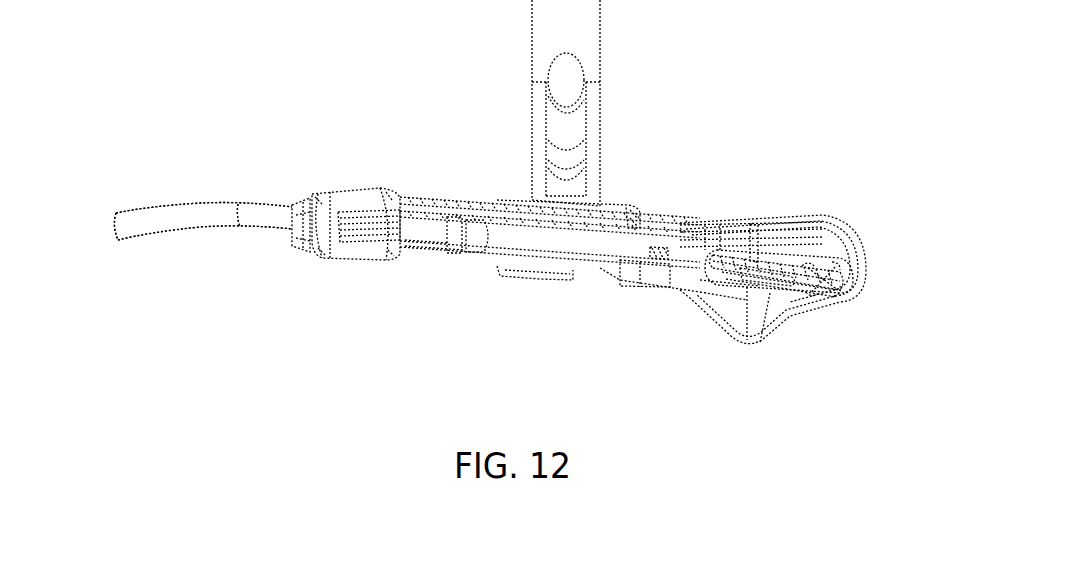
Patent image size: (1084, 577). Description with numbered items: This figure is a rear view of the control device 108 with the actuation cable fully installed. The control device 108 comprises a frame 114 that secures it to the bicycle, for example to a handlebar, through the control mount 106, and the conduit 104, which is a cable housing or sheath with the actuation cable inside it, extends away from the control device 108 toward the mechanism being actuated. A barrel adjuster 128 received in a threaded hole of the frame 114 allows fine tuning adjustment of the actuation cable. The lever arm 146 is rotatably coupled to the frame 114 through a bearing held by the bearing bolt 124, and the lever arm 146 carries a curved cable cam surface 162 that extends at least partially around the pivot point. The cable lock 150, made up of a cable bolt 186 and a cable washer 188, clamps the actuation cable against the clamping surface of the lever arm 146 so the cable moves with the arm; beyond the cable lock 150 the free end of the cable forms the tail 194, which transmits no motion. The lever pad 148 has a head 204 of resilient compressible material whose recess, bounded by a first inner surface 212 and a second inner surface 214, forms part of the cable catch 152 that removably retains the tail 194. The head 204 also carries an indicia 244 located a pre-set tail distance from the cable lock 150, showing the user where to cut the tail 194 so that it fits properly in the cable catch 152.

The conduit 104 is at (272, 218).
The control mount 106 is at (593, 42).
The control device 108 is at (436, 160).
The frame 114 is at (630, 208).
The bearing bolt 124 is at (548, 276).
The barrel adjuster 128 is at (346, 246).
The lever arm 146 is at (782, 319).
The lever pad 148 is at (843, 281).
The cable lock 150 is at (655, 298).
The cable catch 152 is at (764, 276).
The cable cam surface 162 is at (484, 239).
The cable bolt 186 is at (646, 273).
The cable washer 188 is at (675, 261).
The tail 194 is at (700, 249).
The head 204 is at (762, 258).
The first inner surface 212 is at (791, 266).
The second inner surface 214 is at (797, 284).
The indicia 244 is at (826, 274).